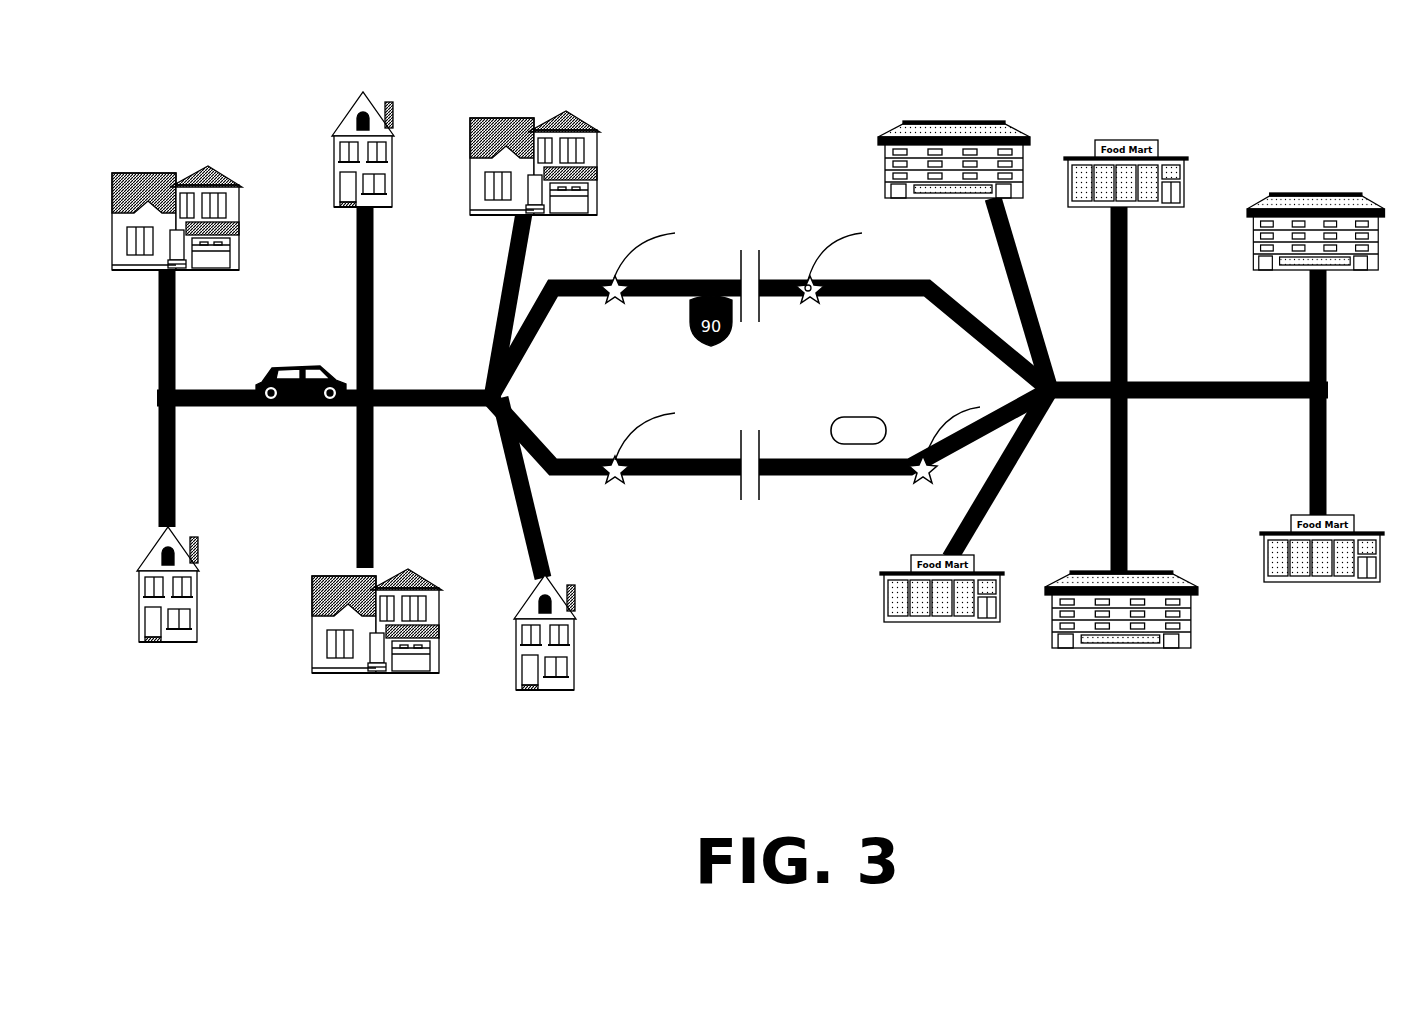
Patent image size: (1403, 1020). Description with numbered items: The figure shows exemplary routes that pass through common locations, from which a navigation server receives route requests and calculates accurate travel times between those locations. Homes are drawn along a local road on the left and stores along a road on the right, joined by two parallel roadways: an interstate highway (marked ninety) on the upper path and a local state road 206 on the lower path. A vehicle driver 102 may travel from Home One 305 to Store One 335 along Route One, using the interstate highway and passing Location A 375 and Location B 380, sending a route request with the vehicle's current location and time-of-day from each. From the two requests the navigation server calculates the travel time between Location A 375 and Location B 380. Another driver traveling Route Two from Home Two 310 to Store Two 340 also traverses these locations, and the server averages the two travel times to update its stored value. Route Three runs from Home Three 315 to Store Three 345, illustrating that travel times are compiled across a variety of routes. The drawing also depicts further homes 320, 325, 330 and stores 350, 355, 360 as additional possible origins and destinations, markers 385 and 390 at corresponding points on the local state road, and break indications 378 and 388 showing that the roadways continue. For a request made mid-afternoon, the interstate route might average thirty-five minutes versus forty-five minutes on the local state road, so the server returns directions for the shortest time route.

The vehicle driver 102 is at (262, 380).
The local state road 206 is at (858, 430).
The Home 1 305 is at (240, 222).
The Home 2 310 is at (205, 598).
The Home 3 315 is at (398, 162).
The Home 4 320 is at (440, 632).
The Home 4 325 is at (598, 160).
The Home 3 330 is at (582, 648).
The Store 1 335 is at (878, 158).
The Store 2 340 is at (880, 592).
The Store 3 345 is at (1172, 152).
The Store 4 350 is at (1045, 627).
The Store 5 355 is at (1247, 225).
The Store 6 360 is at (1260, 553).
The Location A 375 is at (624, 292).
The road break 378 is at (761, 302).
The Location B 380 is at (818, 295).
The location C marker 385 is at (652, 476).
The road break 388 is at (761, 483).
The location D marker 390 is at (915, 478).